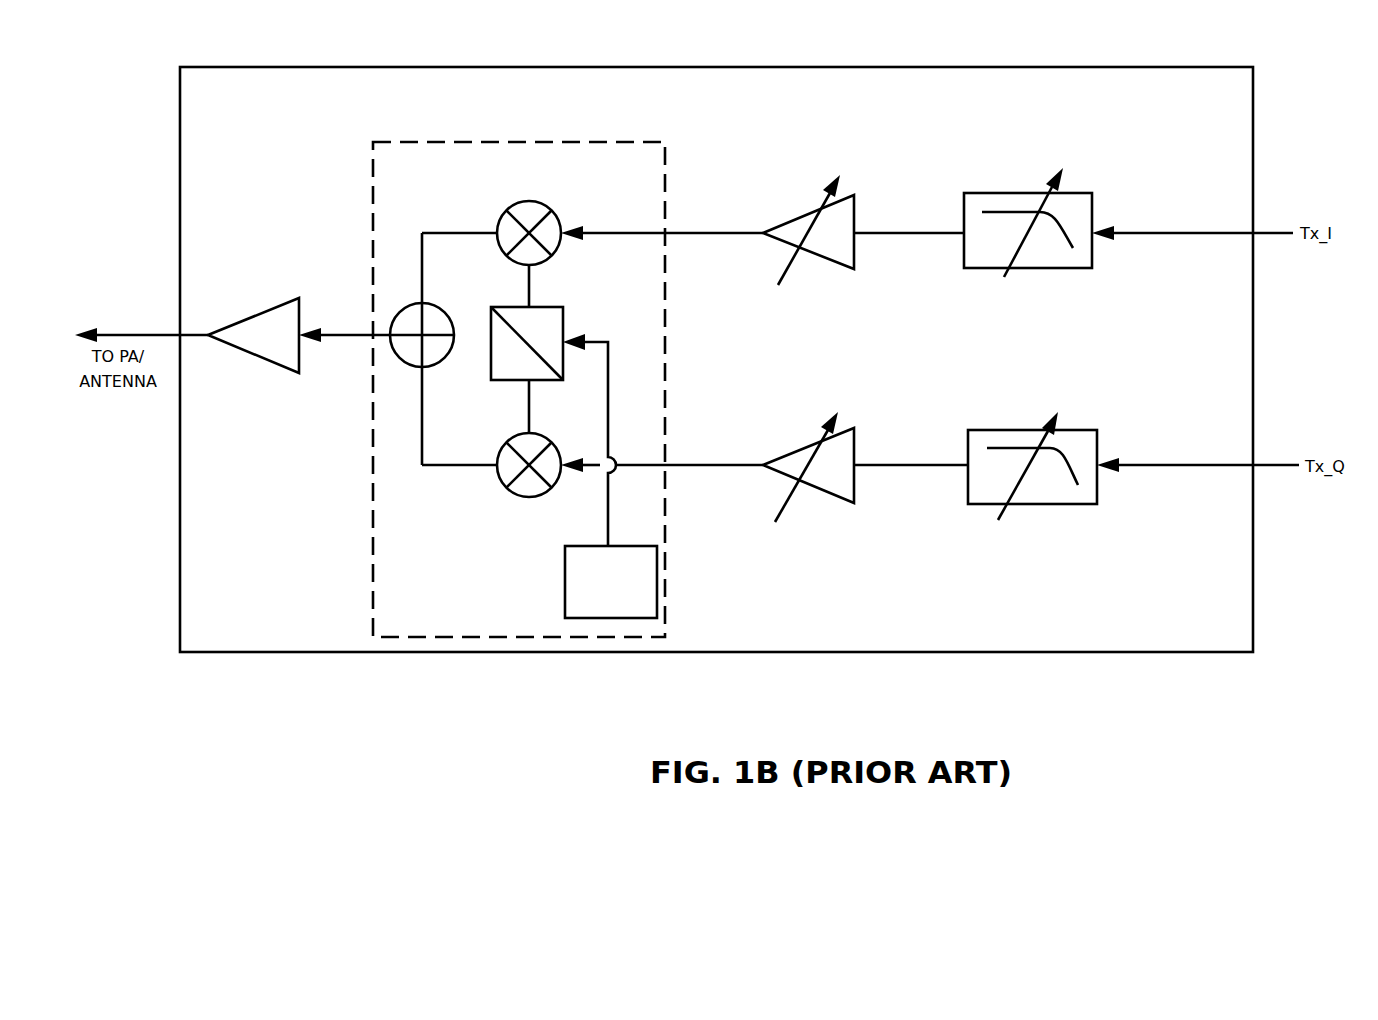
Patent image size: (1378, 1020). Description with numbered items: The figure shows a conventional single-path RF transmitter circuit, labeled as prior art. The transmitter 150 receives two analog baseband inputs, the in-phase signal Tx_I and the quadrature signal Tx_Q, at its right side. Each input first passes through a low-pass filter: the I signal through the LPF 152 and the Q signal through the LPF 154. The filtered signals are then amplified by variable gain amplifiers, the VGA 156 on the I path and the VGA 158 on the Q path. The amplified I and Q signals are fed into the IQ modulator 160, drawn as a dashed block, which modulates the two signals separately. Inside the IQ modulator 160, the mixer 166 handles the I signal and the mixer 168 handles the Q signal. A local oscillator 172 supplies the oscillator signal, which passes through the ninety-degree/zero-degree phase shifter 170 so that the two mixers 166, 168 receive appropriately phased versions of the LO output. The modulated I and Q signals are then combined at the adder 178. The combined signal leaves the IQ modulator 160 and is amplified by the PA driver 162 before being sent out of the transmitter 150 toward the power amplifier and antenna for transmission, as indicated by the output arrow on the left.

The transmitter 150 is at (703, 718).
The LPF 152 is at (1018, 193).
The LPF 154 is at (1020, 505).
The VGA 156 is at (805, 212).
The VGA 158 is at (818, 492).
The IQ modulator 160 is at (500, 142).
The power amplifier driver 162 is at (273, 362).
The mixer 166 is at (529, 200).
The mixer 168 is at (530, 498).
The 90°/0° phase shifter 170 is at (563, 307).
The local oscillator 172 is at (610, 476).
The adder 178 is at (405, 362).